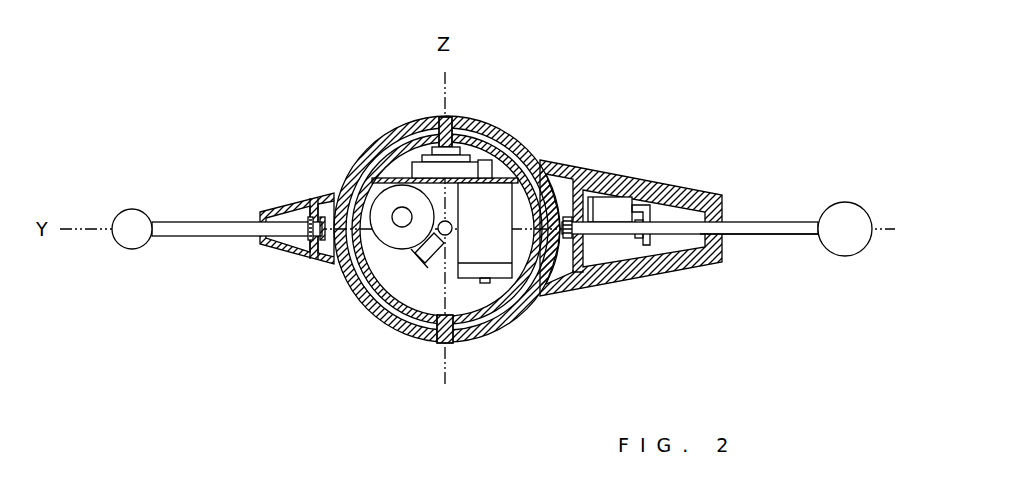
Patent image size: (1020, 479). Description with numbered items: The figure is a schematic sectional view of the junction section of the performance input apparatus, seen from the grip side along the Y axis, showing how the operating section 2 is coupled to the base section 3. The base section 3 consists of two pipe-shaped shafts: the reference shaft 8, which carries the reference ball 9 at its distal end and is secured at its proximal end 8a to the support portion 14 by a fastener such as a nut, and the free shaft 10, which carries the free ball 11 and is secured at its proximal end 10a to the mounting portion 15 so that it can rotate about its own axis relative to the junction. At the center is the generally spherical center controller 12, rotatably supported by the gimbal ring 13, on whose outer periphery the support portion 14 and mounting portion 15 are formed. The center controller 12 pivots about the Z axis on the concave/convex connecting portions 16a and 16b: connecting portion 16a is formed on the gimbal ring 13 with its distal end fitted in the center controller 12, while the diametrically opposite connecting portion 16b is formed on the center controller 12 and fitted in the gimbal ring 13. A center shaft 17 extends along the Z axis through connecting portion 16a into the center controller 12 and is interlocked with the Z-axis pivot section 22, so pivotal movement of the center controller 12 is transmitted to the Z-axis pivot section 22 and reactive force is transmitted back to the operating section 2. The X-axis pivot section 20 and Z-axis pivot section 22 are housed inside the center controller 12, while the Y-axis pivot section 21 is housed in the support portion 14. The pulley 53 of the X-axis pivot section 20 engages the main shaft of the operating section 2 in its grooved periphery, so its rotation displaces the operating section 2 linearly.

The operating section 2 is at (458, 240).
The base section 3 is at (778, 213).
The reference shaft 8 is at (768, 235).
The proximal end 8a is at (588, 286).
The reference ball 9 is at (843, 203).
The free shaft 10 is at (200, 221).
The proximal end 10a is at (326, 262).
The free ball 11 is at (136, 214).
The center controller 12 is at (376, 160).
The gimbal ring 13 is at (345, 176).
The support portion 14 is at (679, 270).
The mounting portion 15 is at (260, 246).
The concave/convex connecting portion 16a is at (415, 123).
The concave/convex connecting portion 16b is at (455, 342).
The center shaft 17 is at (452, 118).
The X-axis pivot section 20 is at (398, 254).
The Y-axis pivot section 21 is at (621, 202).
The Z-axis pivot section 22 is at (497, 186).
The pulley 53 is at (428, 262).